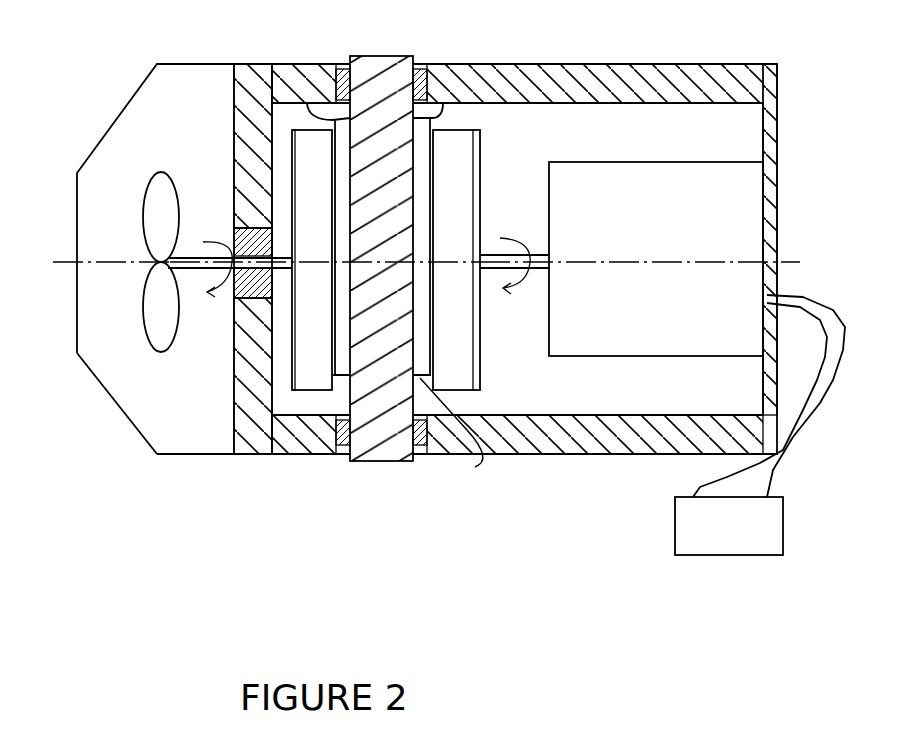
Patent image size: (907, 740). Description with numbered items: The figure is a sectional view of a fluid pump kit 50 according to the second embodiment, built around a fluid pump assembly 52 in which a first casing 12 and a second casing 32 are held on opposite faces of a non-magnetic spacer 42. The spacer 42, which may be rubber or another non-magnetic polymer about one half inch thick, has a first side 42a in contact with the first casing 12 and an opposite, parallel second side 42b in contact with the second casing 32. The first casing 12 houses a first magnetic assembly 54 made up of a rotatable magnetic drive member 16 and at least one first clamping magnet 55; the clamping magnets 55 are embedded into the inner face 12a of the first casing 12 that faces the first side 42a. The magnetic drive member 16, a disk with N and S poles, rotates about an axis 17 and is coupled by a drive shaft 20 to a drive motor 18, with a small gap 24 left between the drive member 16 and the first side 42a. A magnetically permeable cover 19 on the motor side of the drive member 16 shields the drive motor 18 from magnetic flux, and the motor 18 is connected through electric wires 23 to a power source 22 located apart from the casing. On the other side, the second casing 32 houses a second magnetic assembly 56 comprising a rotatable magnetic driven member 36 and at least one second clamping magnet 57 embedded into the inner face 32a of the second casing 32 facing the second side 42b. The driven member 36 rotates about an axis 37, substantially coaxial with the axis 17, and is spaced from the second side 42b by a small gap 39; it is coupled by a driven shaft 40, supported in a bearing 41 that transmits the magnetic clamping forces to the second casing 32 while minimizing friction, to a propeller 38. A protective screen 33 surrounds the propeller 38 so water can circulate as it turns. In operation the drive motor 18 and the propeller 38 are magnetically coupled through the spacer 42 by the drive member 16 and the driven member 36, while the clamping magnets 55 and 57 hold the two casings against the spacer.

The first casing 12 is at (700, 75).
The inner face of the first casing 12a is at (405, 462).
The magnetic drive member 16 is at (460, 340).
The axis 17 is at (723, 256).
The drive motor 18 is at (748, 185).
The cover 19 is at (476, 310).
The drive shaft 20 is at (530, 250).
The power source 22 is at (784, 523).
The electric wires 23 is at (823, 383).
The gap 24 is at (454, 310).
The second casing 32 is at (245, 78).
The inner face of the second casing 32a is at (361, 462).
The protective screen 33 is at (127, 418).
The magnetic driven member 36 is at (300, 322).
The axis 37 is at (63, 262).
The propeller 38 is at (148, 315).
The gap 39 is at (338, 377).
The driven shaft 40 is at (187, 255).
The bearing 41 is at (240, 283).
The non-magnetic spacer 42 is at (385, 72).
The first side 42a is at (447, 100).
The second side 42b is at (300, 103).
The fluid pump kit 50 is at (313, 533).
The fluid pump assembly 52 is at (543, 42).
The first magnetic assembly 54 is at (467, 404).
The first clamping magnet 55 is at (435, 72).
The second magnetic assembly 56 is at (307, 410).
The second clamping magnet 57 is at (332, 78).